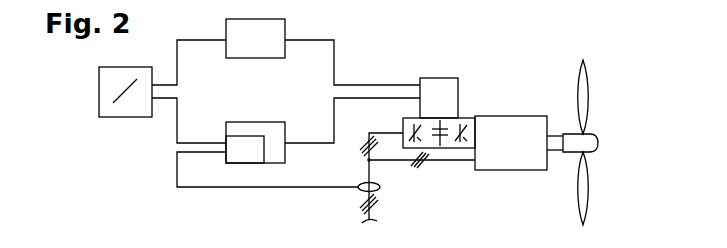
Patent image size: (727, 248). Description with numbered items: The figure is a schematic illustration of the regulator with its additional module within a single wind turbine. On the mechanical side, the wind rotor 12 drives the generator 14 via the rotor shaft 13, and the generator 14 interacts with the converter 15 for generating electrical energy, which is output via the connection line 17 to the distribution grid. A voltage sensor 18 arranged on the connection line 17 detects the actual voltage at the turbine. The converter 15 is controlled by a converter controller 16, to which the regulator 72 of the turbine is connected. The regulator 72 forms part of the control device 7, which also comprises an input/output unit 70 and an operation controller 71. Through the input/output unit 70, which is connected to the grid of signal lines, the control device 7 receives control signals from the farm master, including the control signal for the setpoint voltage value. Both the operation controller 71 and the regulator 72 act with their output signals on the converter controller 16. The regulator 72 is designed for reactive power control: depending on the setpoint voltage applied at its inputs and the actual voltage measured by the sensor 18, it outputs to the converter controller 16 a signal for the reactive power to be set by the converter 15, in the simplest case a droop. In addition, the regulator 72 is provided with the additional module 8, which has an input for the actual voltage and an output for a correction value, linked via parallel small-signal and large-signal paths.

The control device 7 is at (341, 70).
The input/output unit 70 is at (125, 118).
The operation controller 71 is at (278, 58).
The regulator 72 is at (237, 122).
The additional module 8 is at (253, 140).
The converter controller 16 is at (440, 78).
The converter 15 is at (468, 116).
The generator 14 is at (525, 171).
The rotor shaft 13 is at (561, 133).
The wind rotor 12 is at (600, 140).
The connection line 17 is at (362, 173).
The voltage sensor 18 is at (380, 187).